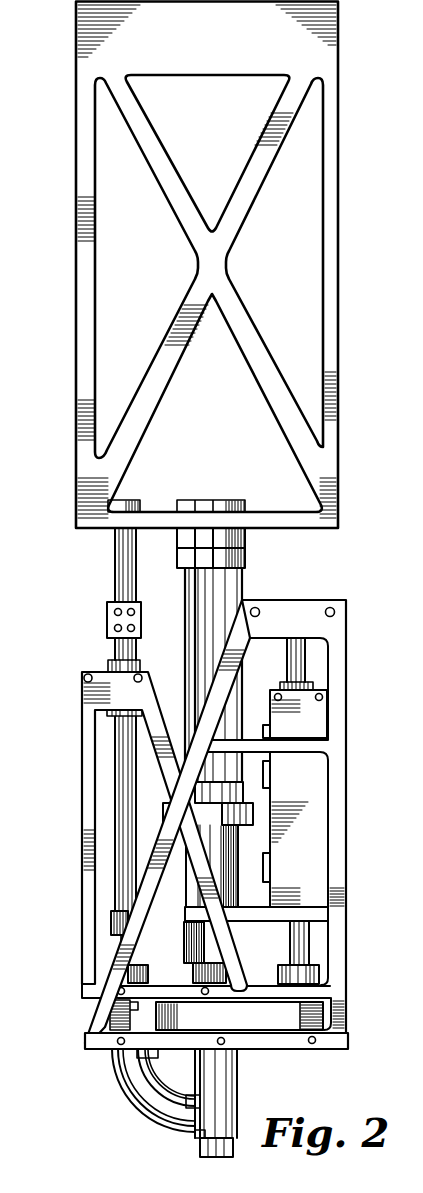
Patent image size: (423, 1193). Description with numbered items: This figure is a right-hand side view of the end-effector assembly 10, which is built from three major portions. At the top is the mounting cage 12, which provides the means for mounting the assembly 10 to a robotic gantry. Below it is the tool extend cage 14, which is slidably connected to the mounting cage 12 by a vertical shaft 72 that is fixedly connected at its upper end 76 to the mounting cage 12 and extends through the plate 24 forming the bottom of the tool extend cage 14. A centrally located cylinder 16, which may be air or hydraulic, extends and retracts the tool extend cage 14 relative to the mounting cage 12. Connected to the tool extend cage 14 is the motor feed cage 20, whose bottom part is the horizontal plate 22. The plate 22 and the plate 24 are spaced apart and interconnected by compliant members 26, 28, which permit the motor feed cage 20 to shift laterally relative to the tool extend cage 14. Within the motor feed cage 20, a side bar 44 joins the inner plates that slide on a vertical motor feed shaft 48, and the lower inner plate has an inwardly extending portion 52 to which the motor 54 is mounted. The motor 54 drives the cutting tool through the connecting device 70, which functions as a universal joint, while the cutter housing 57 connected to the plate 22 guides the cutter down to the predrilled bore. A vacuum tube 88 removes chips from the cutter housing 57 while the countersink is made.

The end-effector assembly 10 is at (361, 188).
The mounting cage 12 is at (348, 304).
The tool extend cage 14 is at (83, 742).
The cylinder 16 is at (229, 591).
The motor feed cage 20 is at (348, 770).
The horizontal plate 22 is at (279, 1043).
The plate 24 is at (263, 985).
The compliant member 26 is at (85, 1042).
The compliant member 28 is at (313, 1019).
The side bar 44 is at (312, 798).
The vertical motor feed shaft 48 is at (305, 682).
The inwardly extending portion 52 is at (248, 905).
The motor 54 is at (190, 885).
The cutter housing 57 is at (232, 1085).
The connecting device 70 is at (188, 953).
The vertical shaft 72 is at (125, 586).
The upper end 76 is at (113, 532).
The vacuum tube 88 is at (130, 1086).